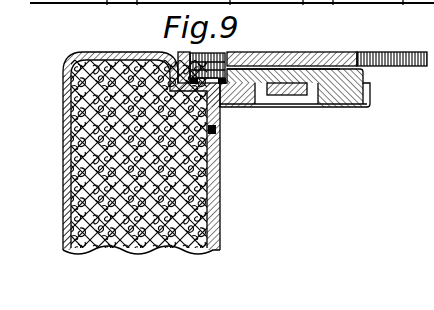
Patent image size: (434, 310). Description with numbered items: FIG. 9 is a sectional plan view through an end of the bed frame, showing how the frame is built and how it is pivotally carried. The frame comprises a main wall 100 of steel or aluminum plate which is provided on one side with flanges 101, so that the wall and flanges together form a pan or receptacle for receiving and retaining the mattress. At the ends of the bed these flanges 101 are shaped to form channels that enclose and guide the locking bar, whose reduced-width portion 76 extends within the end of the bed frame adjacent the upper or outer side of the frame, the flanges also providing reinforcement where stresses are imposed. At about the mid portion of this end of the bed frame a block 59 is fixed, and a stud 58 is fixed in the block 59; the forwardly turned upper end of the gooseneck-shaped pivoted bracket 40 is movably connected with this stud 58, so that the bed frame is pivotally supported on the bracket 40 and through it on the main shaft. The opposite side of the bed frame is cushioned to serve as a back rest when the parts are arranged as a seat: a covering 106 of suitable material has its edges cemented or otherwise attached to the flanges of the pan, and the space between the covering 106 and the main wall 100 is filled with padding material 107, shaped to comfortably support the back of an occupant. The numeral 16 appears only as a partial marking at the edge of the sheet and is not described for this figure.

The main wall 100 is at (219, 203).
The covering 106 is at (64, 171).
The padding material 107 is at (118, 130).
The pivoted bracket 40 is at (333, 53).
The block 59 is at (362, 73).
The stud 58 is at (225, 57).
The flanges 101 is at (391, 138).
The reduced-width portion of locking bar 76 is at (298, 95).
The adjacent element 16 is at (410, 196).